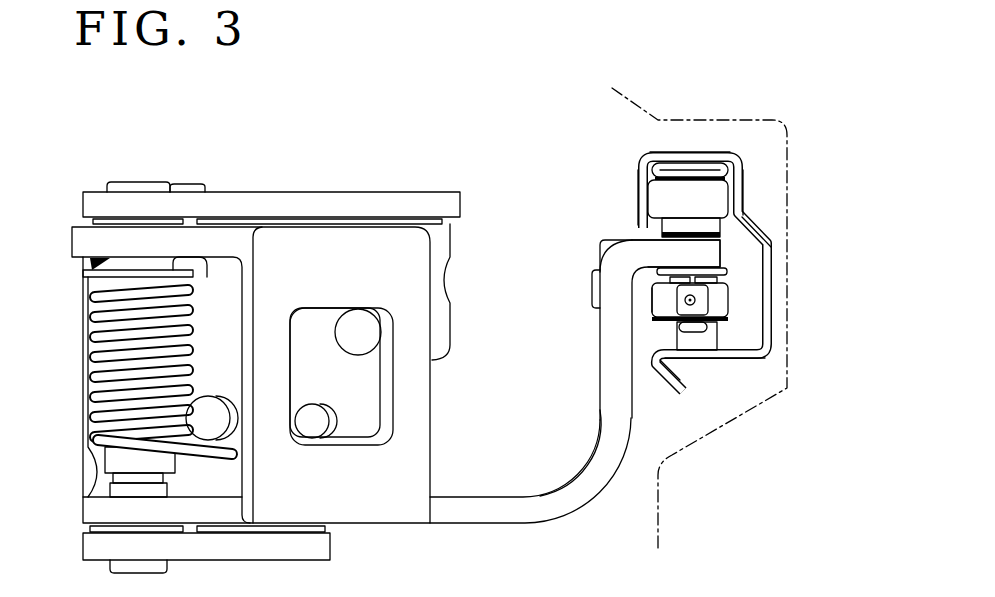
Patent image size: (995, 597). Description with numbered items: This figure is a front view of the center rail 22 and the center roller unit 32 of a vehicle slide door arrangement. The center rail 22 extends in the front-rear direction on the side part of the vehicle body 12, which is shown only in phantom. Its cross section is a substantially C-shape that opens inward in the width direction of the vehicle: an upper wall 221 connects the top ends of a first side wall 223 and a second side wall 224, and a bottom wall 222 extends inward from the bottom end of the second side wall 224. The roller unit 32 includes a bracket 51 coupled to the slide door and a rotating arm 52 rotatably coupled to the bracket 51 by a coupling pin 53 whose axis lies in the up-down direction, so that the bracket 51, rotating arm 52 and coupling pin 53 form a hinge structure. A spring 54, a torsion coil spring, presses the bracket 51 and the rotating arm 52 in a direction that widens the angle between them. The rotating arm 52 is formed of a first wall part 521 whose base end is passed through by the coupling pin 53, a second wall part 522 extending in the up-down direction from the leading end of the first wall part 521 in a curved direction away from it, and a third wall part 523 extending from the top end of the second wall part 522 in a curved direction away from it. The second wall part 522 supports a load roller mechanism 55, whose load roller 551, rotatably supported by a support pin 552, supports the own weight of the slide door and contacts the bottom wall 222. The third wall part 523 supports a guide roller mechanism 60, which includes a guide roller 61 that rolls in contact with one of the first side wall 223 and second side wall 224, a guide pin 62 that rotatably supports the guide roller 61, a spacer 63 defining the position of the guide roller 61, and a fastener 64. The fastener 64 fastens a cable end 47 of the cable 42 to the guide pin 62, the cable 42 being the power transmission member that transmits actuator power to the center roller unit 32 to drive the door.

The vehicle body 12 is at (658, 550).
The center rail 22 is at (776, 370).
The center roller unit 32 is at (233, 148).
The cable 42 is at (728, 297).
The cable end 47 is at (660, 290).
The bracket 51 is at (387, 191).
The rotating arm 52 is at (388, 513).
The coupling pin 53 is at (137, 181).
The spring 54 is at (88, 445).
The load roller mechanism 55 is at (755, 352).
The guide roller mechanism 60 is at (667, 161).
The guide roller 61 is at (655, 198).
The guide pin 62 is at (718, 168).
The spacer 63 is at (745, 222).
The fastener 64 is at (657, 322).
The upper wall 221 is at (695, 152).
The bottom wall 222 is at (717, 366).
The first side wall 223 is at (640, 178).
The second side wall 224 is at (760, 226).
The first wall part 521 is at (472, 513).
The second wall part 522 is at (600, 372).
The third wall part 523 is at (715, 252).
The load roller 551 is at (728, 334).
The support pin 552 is at (592, 291).